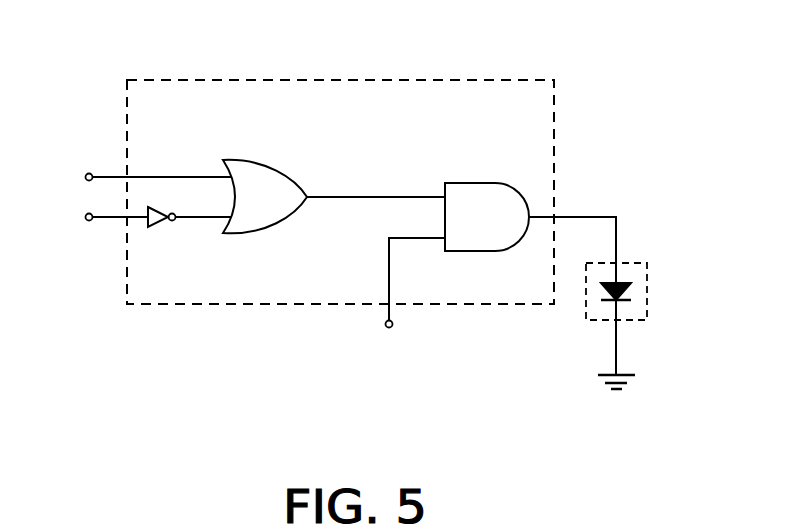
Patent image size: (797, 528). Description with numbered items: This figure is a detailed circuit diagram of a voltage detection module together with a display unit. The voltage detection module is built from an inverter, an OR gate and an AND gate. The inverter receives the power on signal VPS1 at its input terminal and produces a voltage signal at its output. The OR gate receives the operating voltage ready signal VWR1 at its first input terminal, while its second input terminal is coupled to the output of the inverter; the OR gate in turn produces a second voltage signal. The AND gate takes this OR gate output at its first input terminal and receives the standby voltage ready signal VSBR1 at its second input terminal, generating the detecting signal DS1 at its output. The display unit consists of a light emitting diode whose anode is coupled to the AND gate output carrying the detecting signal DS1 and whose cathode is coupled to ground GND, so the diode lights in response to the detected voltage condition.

The operating voltage ready signal VWR1 is at (127, 177).
The power on signal VPS1 is at (85, 217).
The standby voltage ready signal VSBR1 is at (403, 301).
The detecting signal DS1 is at (605, 216).
The ground GND is at (617, 364).